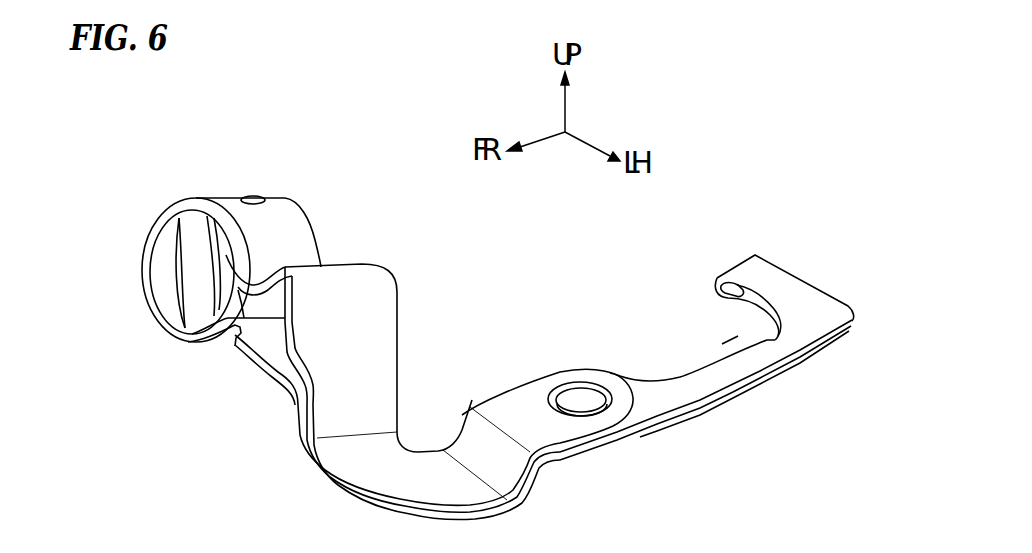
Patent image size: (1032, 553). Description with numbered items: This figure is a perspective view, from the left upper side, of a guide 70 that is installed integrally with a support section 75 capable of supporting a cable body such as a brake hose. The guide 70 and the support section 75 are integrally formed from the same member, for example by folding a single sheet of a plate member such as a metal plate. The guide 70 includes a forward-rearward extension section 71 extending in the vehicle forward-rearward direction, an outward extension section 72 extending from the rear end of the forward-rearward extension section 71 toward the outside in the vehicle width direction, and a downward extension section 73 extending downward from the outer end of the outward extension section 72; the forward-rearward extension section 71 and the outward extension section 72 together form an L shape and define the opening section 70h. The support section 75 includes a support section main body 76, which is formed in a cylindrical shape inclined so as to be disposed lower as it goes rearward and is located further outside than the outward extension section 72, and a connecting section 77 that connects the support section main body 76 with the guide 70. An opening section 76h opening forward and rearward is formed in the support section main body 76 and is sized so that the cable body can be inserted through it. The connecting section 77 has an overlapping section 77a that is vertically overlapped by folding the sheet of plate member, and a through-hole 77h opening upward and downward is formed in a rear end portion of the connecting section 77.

The guide 70 is at (766, 253).
The opening section 70h is at (727, 327).
The forward-rearward extension section 71 is at (725, 380).
The outward extension section 72 is at (797, 290).
The downward extension section 73 is at (723, 290).
The support section 75 is at (313, 230).
The support section main body 76 is at (272, 209).
The opening section 76h is at (167, 270).
The connecting section 77 is at (378, 326).
The overlapping section 77a is at (407, 465).
The through-hole 77h is at (580, 383).